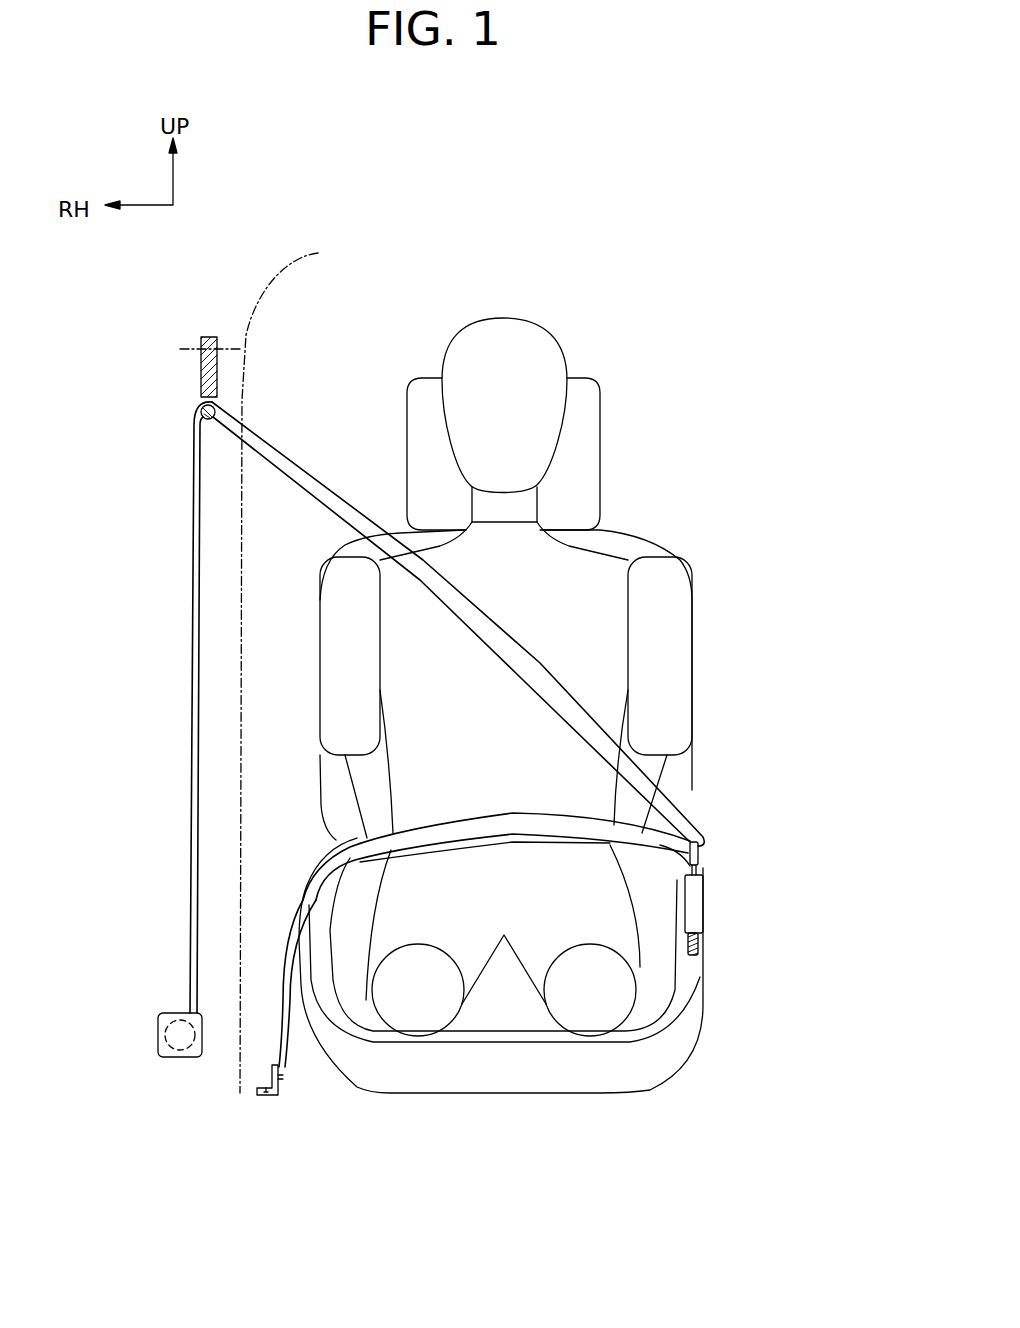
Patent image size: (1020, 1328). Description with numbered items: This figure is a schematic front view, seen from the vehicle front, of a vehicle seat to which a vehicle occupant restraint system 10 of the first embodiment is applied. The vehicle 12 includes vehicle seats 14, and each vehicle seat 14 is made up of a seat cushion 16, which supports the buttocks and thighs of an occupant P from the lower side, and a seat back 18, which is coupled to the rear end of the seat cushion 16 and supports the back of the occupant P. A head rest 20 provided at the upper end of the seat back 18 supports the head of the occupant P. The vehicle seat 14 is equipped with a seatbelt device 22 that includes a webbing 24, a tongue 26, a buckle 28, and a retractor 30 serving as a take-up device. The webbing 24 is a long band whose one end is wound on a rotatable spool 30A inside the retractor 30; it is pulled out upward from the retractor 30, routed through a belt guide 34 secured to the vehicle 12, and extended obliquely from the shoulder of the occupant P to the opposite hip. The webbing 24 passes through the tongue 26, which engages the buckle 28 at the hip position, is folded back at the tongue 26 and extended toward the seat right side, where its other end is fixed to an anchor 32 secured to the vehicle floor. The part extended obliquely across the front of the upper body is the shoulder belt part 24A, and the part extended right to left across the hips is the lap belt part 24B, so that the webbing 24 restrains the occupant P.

The vehicle occupant restraint system 10 is at (436, 744).
The vehicle 12 is at (667, 311).
The vehicle seat 14 is at (604, 443).
The seat cushion 16 is at (703, 1010).
The seat back 18 is at (683, 567).
The head rest 20 is at (600, 390).
The seatbelt device 22 is at (165, 557).
The webbing 24 is at (312, 472).
The shoulder belt part 24A is at (570, 690).
The lap belt part 24B is at (570, 815).
The tongue 26 is at (700, 864).
The buckle 28 is at (703, 907).
The retractor 30 is at (168, 1062).
The spool 30A is at (172, 1013).
The anchor 32 is at (262, 1095).
The belt guide 34 is at (200, 377).
The occupant P is at (542, 326).